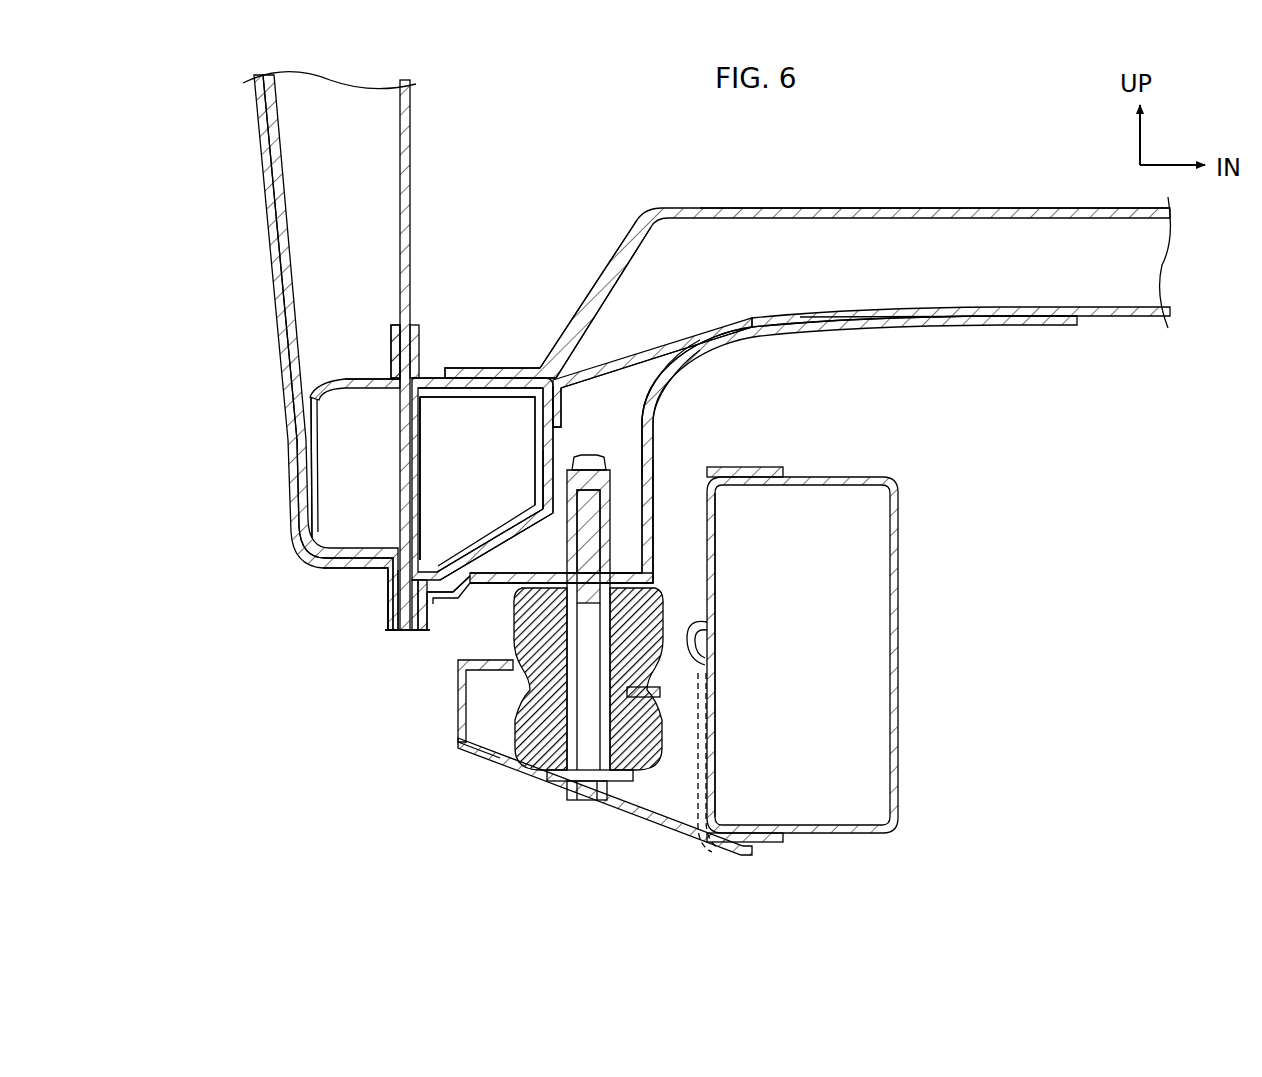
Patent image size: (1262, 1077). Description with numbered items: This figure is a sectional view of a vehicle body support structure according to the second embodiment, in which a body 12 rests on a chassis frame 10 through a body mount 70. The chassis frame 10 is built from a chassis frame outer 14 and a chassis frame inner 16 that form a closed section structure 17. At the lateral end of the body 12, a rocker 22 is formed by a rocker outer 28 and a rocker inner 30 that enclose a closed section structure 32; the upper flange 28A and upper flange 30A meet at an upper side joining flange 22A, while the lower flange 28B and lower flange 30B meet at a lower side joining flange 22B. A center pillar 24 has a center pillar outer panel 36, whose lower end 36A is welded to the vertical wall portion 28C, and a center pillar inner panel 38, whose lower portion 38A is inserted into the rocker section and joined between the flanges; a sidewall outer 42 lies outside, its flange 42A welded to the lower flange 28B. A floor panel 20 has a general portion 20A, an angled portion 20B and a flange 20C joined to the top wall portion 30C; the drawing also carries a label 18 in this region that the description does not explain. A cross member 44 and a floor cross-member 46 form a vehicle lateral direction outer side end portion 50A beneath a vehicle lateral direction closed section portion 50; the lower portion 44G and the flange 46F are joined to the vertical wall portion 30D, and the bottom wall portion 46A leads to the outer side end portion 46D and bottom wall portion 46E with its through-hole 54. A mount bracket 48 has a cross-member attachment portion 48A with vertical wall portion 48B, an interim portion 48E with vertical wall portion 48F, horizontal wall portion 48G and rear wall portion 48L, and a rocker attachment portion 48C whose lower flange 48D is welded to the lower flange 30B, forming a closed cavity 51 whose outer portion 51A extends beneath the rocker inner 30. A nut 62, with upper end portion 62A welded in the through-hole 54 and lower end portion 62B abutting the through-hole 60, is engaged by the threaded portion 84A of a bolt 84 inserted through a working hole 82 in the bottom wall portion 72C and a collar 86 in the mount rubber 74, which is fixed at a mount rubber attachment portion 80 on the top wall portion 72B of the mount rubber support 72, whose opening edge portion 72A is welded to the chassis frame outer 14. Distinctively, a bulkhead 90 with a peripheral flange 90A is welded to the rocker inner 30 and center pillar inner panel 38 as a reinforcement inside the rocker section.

The chassis frame 10 is at (978, 563).
The body 12 is at (245, 383).
The chassis frame outer 14 is at (724, 553).
The chassis frame inner 16 is at (902, 613).
The closed section structure 17 is at (821, 687).
The roof side rail 18 is at (734, 140).
The floor panel 20 is at (890, 204).
The general portion 20A is at (812, 207).
The angled portion 20B is at (607, 265).
The flange 20C is at (500, 367).
The rocker 22 is at (275, 575).
The upper side joining flange 22A is at (424, 322).
The lower side joining flange 22B is at (392, 632).
The center pillar 24 is at (260, 181).
The rocker outer 28 is at (327, 497).
The upper flange 28A is at (391, 352).
The lower flange 28B is at (386, 632).
The vertical wall portion 28C is at (318, 452).
The rocker inner 30 is at (525, 447).
The upper flange 30A is at (432, 378).
The lower flange 30B is at (424, 632).
The top wall portion 30C is at (528, 447).
The vertical wall portion 30D is at (542, 472).
The closed section structure 32 is at (463, 437).
The center pillar outer panel 36 is at (283, 170).
The lower end 36A is at (311, 456).
The center pillar inner panel 38 is at (400, 205).
The lower portion 38A is at (535, 487).
The sidewall outer 42 is at (270, 233).
The flange 42A is at (386, 620).
The cross member 44 is at (1131, 320).
The lower portion 44G is at (660, 350).
The floor cross-member 46 is at (940, 329).
The bottom wall portion 46A is at (890, 329).
The vehicle lateral direction outer side end portion 46D is at (658, 362).
The bottom wall portion 46E is at (646, 447).
The flange 46F is at (538, 517).
The mount bracket 48 is at (660, 525).
The cross-member attachment portion 48A is at (690, 408).
The vertical wall portion 48B is at (684, 380).
The rocker attachment portion 48C is at (464, 612).
The lower flange 48D is at (427, 606).
The interim portion 48E is at (660, 536).
The vertical wall portion 48F is at (655, 476).
The horizontal wall portion 48G is at (672, 585).
The rear wall portion 48L is at (655, 433).
The vehicle lateral direction closed section portion 50 is at (1061, 277).
The vehicle lateral direction outer side end portion 50A is at (713, 322).
The closed cavity 51 is at (630, 490).
The vehicle lateral direction outer side portion 51A is at (446, 606).
The through-hole 54 is at (584, 455).
The through-hole 60 is at (575, 570).
The nut 62 is at (610, 508).
The upper end portion 62A is at (577, 424).
The lower end portion 62B is at (490, 556).
The body mount 70 is at (550, 855).
The mount rubber support 72 is at (540, 792).
The opening edge portion 72A is at (708, 635).
The top wall portion 72B is at (488, 672).
The bottom wall portion 72C is at (481, 752).
The mount rubber 74 is at (517, 772).
The mount rubber attachment portion 80 is at (652, 664).
The working hole 82 is at (612, 800).
The bolt 84 is at (583, 802).
The threaded portion 84A is at (640, 555).
The collar 86 is at (633, 782).
The bulkhead 90 is at (412, 440).
The flange 90A is at (398, 389).